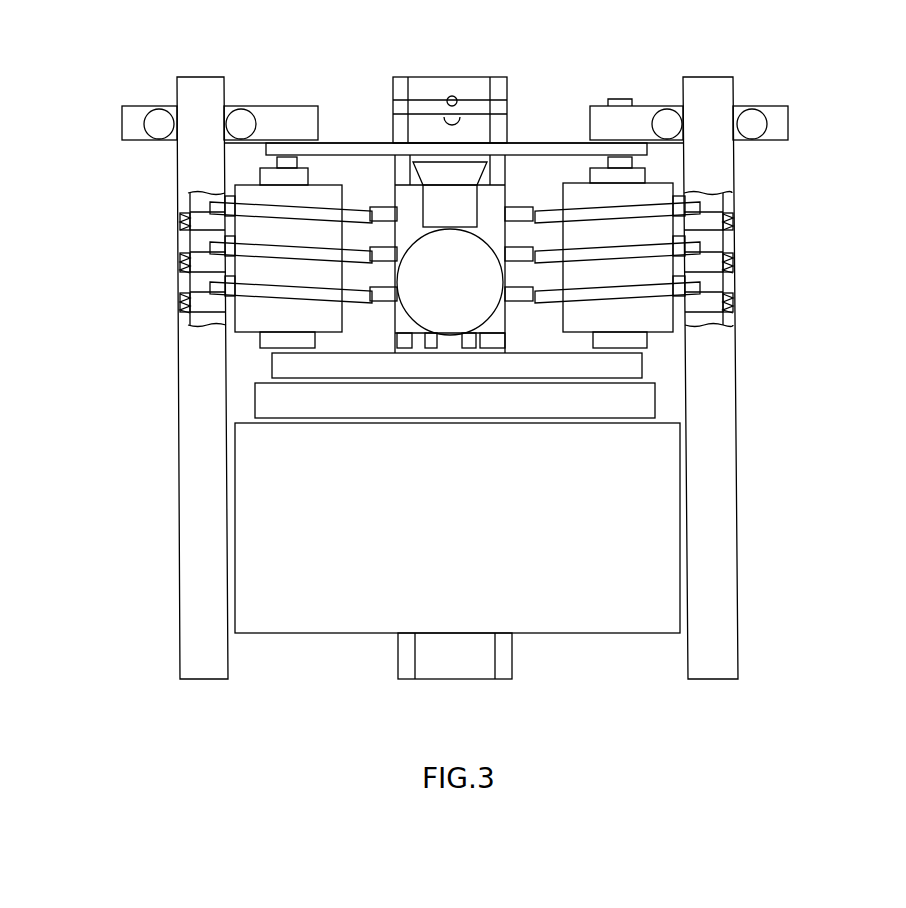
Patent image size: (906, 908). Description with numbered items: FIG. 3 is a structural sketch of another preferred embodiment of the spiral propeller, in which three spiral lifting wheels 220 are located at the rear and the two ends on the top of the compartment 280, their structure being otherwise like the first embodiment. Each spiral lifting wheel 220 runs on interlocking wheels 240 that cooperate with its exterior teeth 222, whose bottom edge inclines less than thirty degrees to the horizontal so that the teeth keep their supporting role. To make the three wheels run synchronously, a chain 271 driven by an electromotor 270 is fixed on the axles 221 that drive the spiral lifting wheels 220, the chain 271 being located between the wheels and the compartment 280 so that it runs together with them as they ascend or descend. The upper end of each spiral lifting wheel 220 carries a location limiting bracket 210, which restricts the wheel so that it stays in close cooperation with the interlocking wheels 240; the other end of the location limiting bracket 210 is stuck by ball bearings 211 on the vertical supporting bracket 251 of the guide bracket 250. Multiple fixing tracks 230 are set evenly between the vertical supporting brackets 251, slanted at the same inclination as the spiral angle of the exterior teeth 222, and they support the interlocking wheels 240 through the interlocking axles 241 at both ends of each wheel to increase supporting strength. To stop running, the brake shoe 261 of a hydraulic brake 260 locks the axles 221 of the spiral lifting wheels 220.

The location limiting bracket 210 is at (132, 120).
The ball bearings 211 is at (160, 132).
The spiral lifting wheel 220 is at (315, 197).
The axle 221 is at (282, 160).
The exterior teeth 222 is at (229, 204).
The fixing track 230 is at (493, 108).
The interlocking wheel 240 is at (441, 96).
The interlocking axle 241 is at (456, 109).
The guide bracket 250 is at (200, 398).
The vertical supporting bracket 251 is at (397, 78).
The hydraulic brake 260 is at (465, 188).
The brake shoe 261 is at (621, 157).
The electromotor 270 is at (463, 250).
The chain 271 is at (630, 366).
The compartment 280 is at (655, 477).